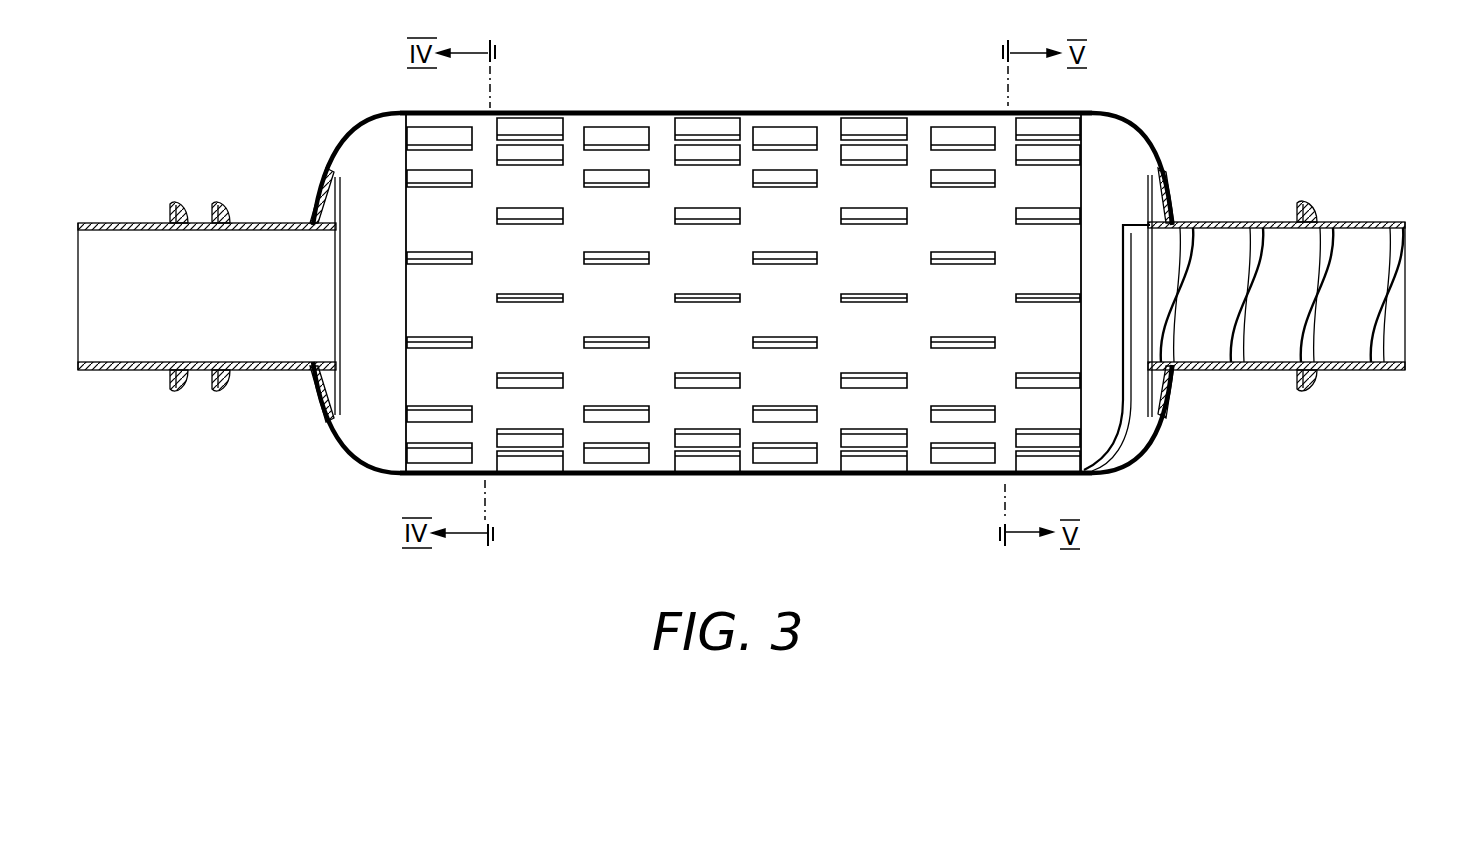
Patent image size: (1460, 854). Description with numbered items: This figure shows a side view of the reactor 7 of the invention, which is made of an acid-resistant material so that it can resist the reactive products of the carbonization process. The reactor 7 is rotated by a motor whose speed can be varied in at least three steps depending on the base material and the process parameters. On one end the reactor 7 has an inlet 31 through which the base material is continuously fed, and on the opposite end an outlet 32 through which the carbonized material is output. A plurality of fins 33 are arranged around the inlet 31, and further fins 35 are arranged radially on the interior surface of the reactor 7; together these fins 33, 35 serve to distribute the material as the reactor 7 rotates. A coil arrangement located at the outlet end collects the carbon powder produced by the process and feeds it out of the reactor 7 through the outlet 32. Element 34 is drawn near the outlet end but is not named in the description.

The reactor 7 is at (672, 92).
The inlet 31 is at (87, 259).
The outlet 32 is at (1390, 275).
The fins 33 is at (340, 187).
The outlet-side partition with guide tube 34 is at (1106, 418).
The fins 35 is at (937, 125).